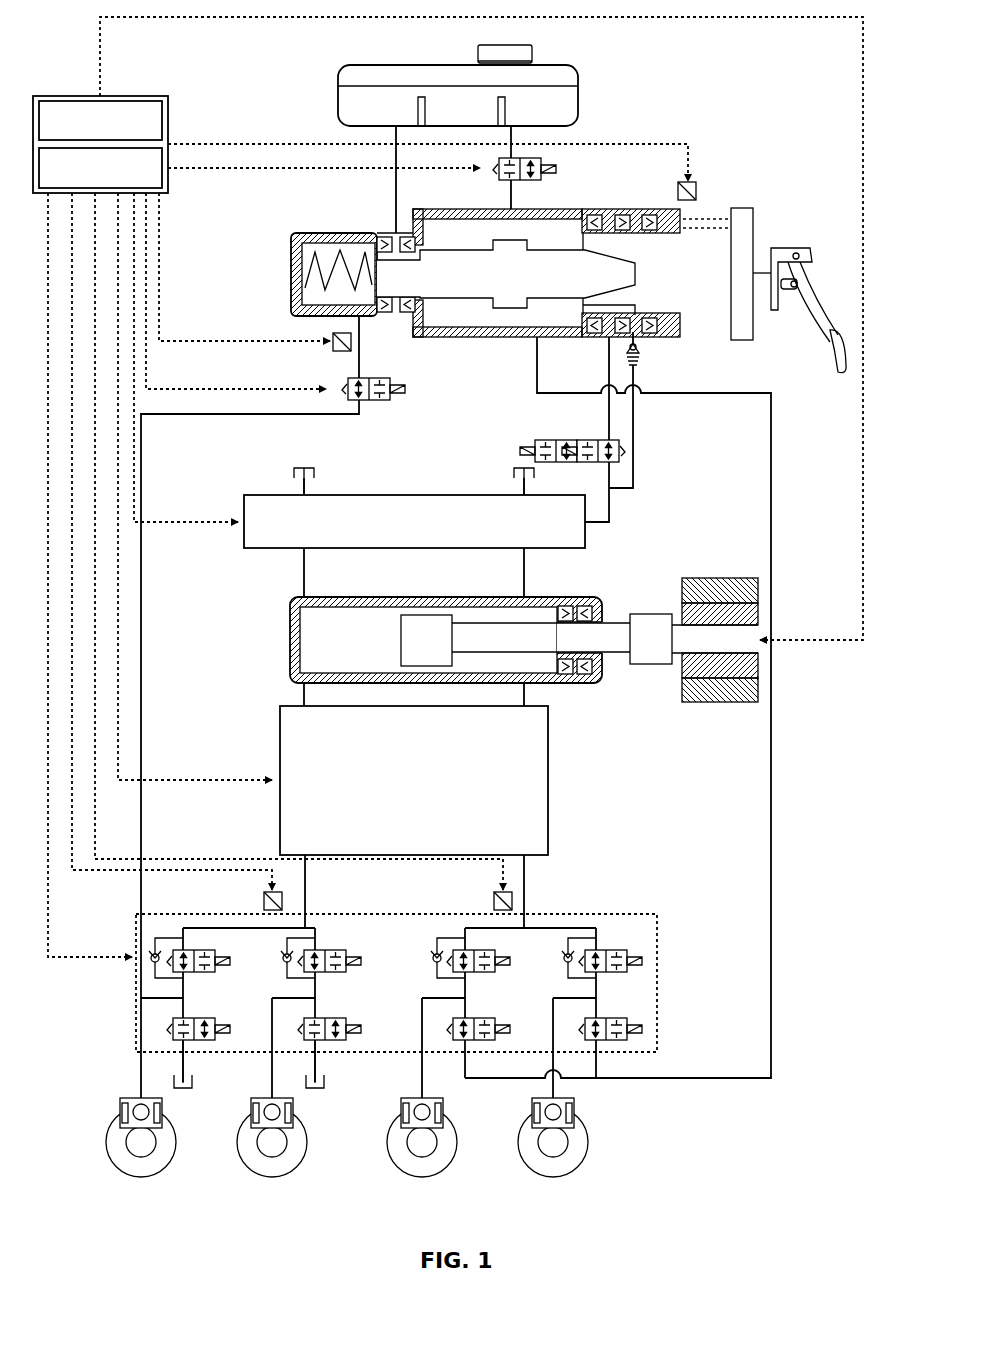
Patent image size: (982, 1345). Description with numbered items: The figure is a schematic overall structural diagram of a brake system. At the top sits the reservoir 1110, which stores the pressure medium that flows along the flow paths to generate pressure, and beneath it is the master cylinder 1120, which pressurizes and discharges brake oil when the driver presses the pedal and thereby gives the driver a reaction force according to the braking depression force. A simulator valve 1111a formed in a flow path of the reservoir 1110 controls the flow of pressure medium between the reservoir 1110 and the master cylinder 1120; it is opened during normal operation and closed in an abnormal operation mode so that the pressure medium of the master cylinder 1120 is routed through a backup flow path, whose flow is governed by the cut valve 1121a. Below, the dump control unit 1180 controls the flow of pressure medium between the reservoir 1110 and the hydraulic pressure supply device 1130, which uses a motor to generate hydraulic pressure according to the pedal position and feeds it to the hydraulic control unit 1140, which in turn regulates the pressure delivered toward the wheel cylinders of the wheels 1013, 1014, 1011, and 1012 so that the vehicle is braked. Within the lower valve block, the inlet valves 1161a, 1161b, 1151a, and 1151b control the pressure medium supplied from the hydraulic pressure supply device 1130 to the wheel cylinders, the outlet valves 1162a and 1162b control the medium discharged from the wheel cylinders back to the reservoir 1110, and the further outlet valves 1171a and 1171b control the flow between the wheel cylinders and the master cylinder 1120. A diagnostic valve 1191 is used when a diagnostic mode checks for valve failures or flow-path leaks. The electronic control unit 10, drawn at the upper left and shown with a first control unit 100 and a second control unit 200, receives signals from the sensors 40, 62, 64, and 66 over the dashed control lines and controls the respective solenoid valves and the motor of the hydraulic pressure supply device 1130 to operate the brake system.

The electronic control unit 10 is at (130, 96).
The first control unit 100 is at (162, 120).
The second control unit 200 is at (162, 176).
The reservoir 1110 is at (580, 70).
The simulator valve 1111a is at (548, 164).
The sensor 40 is at (696, 190).
The master cylinder 1120 is at (283, 242).
The sensor 62 is at (333, 350).
The cut valve 1121a is at (392, 378).
The dump control unit 1180 is at (243, 487).
The diagnostic valve 1191 is at (577, 446).
The hydraulic pressure supply device 1130 is at (268, 612).
The hydraulic control unit 1140 is at (280, 726).
The inlet valve 1161a is at (190, 950).
The inlet valve 1161b is at (335, 950).
The outlet valve 1162a is at (173, 1024).
The outlet valve 1162b is at (325, 1045).
The sensor 66 is at (264, 900).
The sensor 64 is at (512, 902).
The inlet valve 1151a is at (482, 950).
The inlet valve 1151b is at (612, 950).
The outlet valve 1171a is at (478, 1040).
The outlet valve 1171b is at (627, 1018).
The wheel 1013 is at (141, 1177).
The wheel 1014 is at (272, 1177).
The wheel 1011 is at (422, 1177).
The wheel 1012 is at (553, 1177).